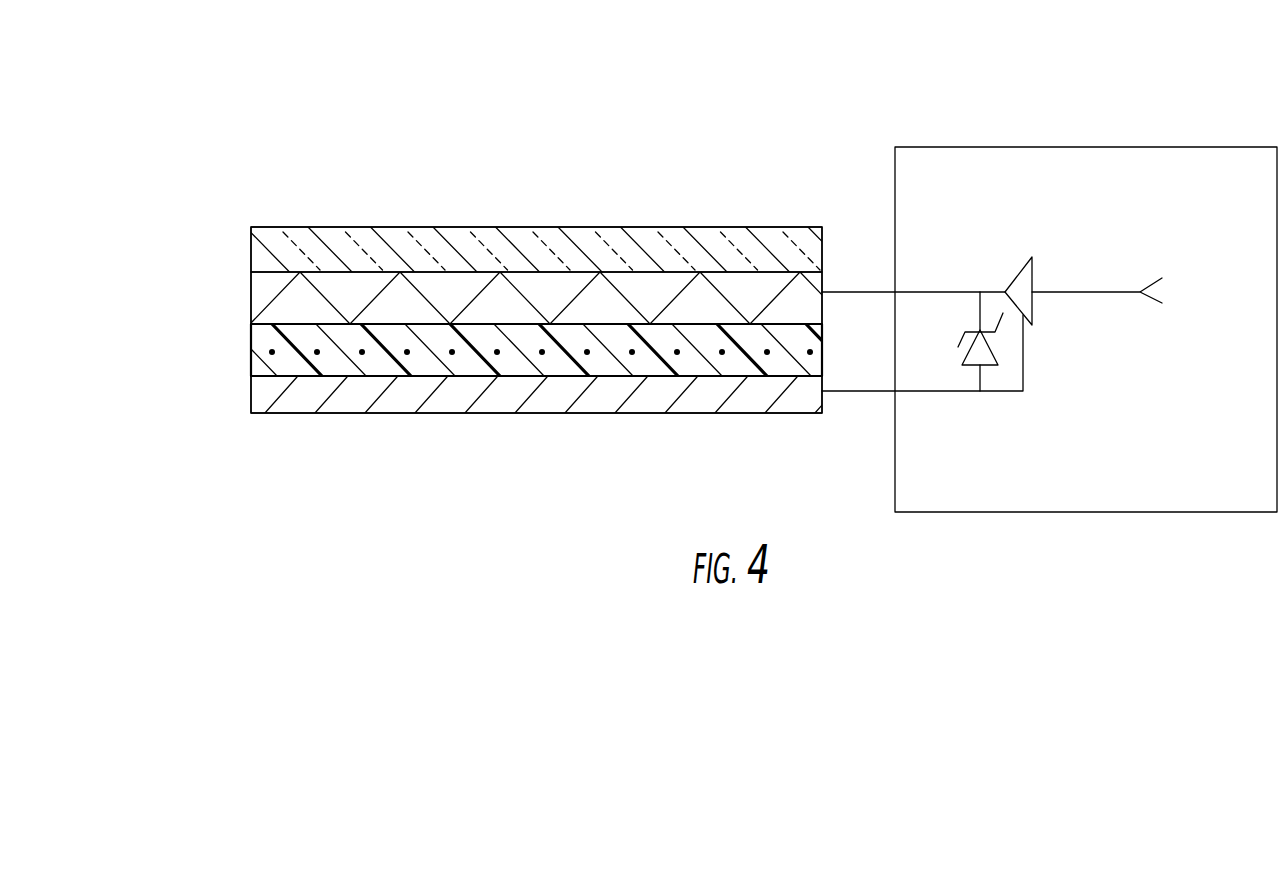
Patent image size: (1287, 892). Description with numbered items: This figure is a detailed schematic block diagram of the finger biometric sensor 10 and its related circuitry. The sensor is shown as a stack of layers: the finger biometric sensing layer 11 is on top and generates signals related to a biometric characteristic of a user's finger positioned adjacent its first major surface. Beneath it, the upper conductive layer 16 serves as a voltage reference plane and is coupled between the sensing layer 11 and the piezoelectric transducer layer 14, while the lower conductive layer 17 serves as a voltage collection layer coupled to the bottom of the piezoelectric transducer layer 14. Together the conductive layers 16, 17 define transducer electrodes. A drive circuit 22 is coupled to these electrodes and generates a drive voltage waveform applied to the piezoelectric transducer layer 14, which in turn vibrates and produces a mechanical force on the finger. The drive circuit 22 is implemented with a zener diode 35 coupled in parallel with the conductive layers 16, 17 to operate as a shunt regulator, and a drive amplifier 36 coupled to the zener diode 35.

The finger biometric sensor 10 is at (225, 183).
The finger biometric sensing layer 11 is at (268, 261).
The upper conductive layer 16 is at (265, 302).
The piezoelectric transducer layer 14 is at (263, 353).
The lower conductive layer 17 is at (263, 405).
The drive circuit 22 is at (1210, 147).
The zener diode 35 is at (962, 357).
The drive amplifier 36 is at (1023, 267).